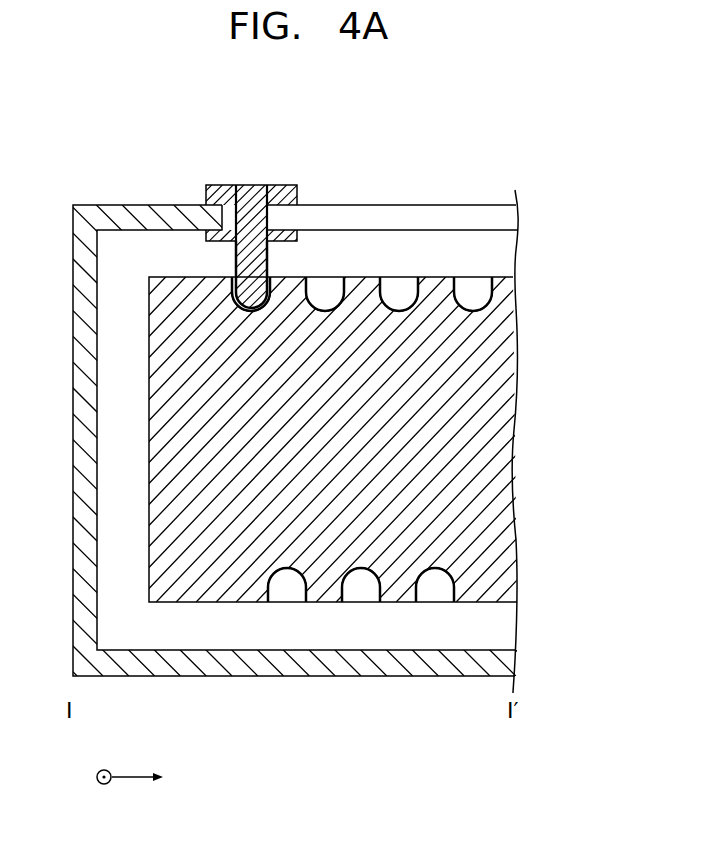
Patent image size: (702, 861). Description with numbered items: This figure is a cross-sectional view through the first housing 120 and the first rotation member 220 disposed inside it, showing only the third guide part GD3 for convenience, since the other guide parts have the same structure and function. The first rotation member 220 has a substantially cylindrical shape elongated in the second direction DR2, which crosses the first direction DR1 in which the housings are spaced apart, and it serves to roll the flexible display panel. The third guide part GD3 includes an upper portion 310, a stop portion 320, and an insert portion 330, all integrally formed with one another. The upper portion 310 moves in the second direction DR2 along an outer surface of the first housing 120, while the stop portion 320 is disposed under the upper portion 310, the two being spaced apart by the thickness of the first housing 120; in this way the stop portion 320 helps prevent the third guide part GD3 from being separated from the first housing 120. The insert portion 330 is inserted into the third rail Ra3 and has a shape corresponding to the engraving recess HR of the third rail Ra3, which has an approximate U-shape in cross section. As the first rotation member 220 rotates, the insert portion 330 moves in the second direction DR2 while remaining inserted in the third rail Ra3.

The first housing 120 is at (445, 217).
The first rotation member 220 is at (508, 461).
The engraving recess HR is at (398, 298).
The third rail Ra3 is at (472, 312).
The third guide part GD3 is at (252, 216).
The stop portion 320 is at (220, 197).
The upper portion 310 is at (293, 195).
The insert portion 330 is at (260, 262).
The first direction DR1 is at (104, 789).
The second direction DR2 is at (157, 779).